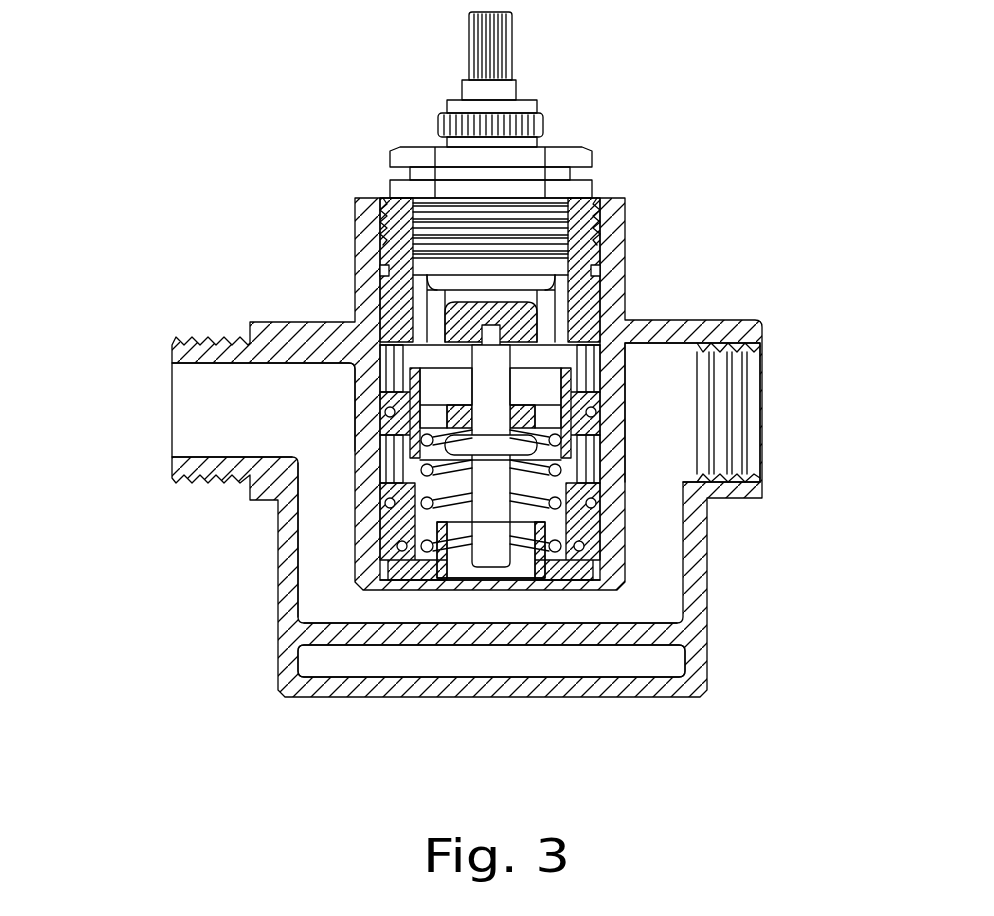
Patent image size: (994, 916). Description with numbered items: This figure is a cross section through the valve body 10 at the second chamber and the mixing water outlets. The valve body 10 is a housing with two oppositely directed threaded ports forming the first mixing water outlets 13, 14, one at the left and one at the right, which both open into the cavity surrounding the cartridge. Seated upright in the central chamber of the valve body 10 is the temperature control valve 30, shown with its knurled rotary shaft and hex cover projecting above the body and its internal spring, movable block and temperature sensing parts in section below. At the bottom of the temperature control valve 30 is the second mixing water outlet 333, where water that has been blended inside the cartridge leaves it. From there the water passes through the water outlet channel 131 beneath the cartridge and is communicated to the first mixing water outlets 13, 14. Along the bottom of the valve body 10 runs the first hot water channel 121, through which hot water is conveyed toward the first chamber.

The valve body 10 is at (233, 553).
The first mixing water outlet 13 is at (183, 415).
The first mixing water outlet 14 is at (733, 417).
The temperature control valve 30 is at (558, 103).
The first hot water channel 121 is at (667, 662).
The water outlet channel 131 is at (413, 607).
The second mixing water outlet 333 is at (523, 570).